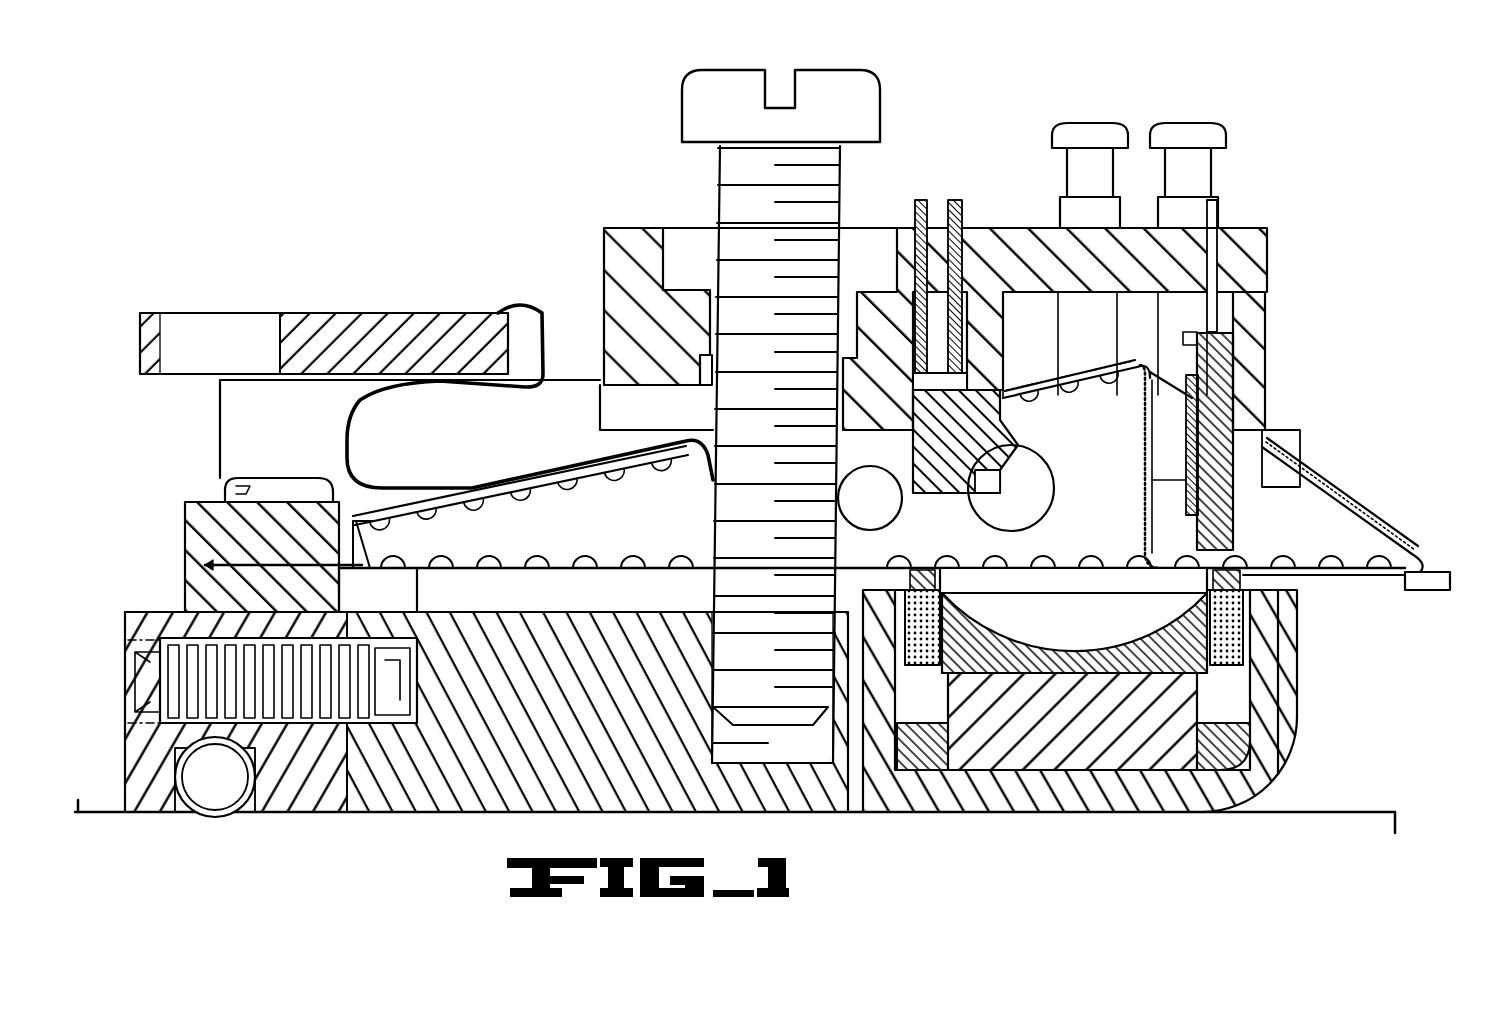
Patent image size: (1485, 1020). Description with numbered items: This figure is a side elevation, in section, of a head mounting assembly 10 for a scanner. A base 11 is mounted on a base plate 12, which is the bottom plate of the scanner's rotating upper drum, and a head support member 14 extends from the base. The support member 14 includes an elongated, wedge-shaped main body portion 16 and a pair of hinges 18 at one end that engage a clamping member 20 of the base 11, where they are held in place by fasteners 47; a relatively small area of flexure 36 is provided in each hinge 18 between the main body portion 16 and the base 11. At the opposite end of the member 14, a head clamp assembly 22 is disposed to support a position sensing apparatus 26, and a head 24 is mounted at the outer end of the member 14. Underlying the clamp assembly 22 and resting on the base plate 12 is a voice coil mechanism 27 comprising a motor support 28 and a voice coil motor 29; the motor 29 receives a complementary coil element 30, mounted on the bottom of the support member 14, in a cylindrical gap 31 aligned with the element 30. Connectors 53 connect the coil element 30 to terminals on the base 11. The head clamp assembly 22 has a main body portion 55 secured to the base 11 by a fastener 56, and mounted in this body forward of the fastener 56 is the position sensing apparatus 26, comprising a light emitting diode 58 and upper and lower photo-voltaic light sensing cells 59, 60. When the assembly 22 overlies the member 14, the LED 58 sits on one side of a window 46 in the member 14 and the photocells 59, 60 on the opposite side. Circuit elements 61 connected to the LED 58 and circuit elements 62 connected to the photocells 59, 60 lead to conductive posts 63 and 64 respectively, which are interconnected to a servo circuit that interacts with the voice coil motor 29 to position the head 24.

The head mounting assembly 10 is at (463, 202).
The base 11 is at (432, 798).
The base plate 12 is at (1322, 833).
The head support member 14 is at (648, 531).
The main body portion 16 is at (665, 552).
The hinges 18 is at (334, 557).
The clamping member 20 is at (193, 528).
The head clamp assembly 22 is at (987, 310).
The head 24 is at (1438, 572).
The position sensing apparatus 26 is at (1097, 432).
The voice coil mechanism 27 is at (1135, 701).
The motor support 28 is at (1266, 669).
The voice coil motor 29 is at (1158, 660).
The coil element 30 is at (1226, 615).
The cylindrical gap 31 is at (924, 666).
The area of flexure 36 is at (372, 578).
The window 46 is at (1142, 458).
The fasteners 47 is at (226, 491).
The connectors 53 is at (413, 478).
The main body portion 55 is at (1250, 270).
The fastener 56 is at (862, 92).
The light emitting diode 58 is at (1012, 426).
The upper photo-voltaic light sensing cell 59 is at (1193, 428).
The lower photo-voltaic light sensing cell 60 is at (1205, 500).
The circuit elements 61 is at (955, 205).
The circuit elements 62 is at (1216, 212).
The conductive post 63 is at (1086, 128).
The conductive post 64 is at (1186, 128).